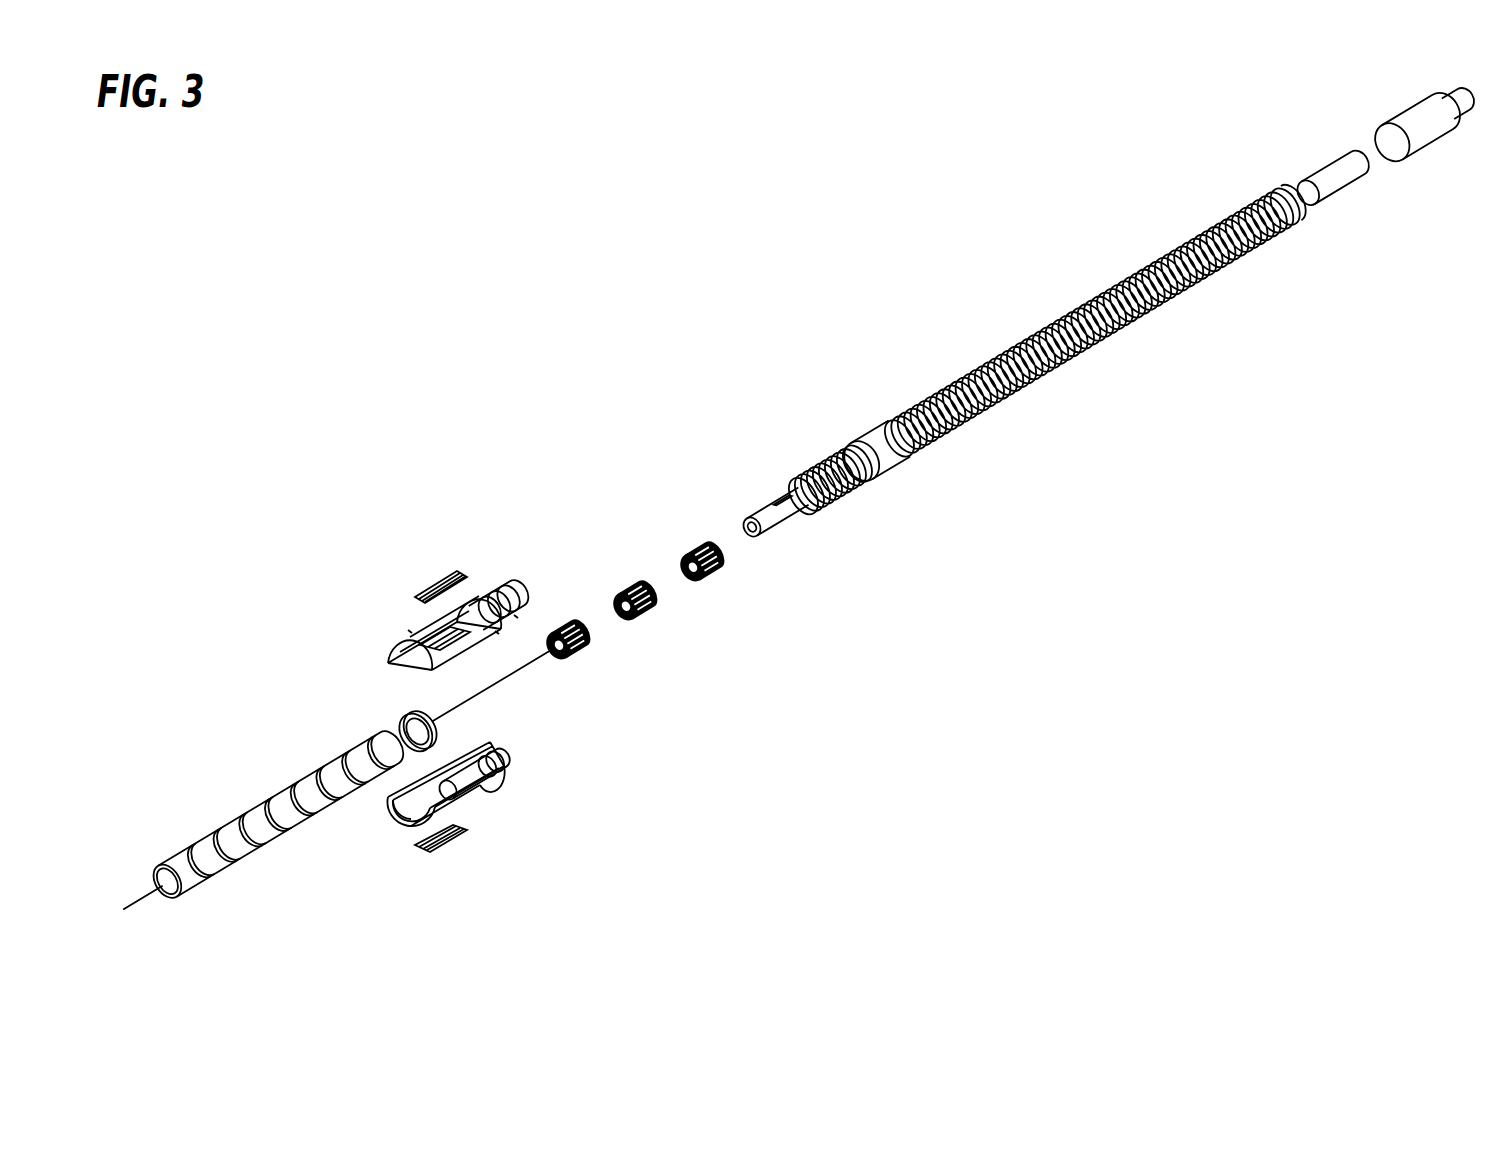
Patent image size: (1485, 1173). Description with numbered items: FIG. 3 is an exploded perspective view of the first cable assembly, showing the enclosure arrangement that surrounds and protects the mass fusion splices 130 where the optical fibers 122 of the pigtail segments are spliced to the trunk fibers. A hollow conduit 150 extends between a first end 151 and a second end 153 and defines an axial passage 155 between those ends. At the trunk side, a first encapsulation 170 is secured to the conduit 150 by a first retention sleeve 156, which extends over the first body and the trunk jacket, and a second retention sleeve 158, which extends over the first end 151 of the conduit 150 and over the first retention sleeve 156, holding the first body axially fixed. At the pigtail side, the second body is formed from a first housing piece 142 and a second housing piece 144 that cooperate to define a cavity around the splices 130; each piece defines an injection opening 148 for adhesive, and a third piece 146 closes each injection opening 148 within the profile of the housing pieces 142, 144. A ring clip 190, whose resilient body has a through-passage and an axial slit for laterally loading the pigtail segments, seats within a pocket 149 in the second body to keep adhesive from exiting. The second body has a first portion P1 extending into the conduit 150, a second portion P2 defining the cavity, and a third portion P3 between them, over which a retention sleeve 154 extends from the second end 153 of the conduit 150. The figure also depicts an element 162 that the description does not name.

The optical fibers 122 is at (140, 897).
The mass fusion splices 130 is at (588, 655).
The first housing piece 142 is at (400, 810).
The second housing piece 144 is at (390, 645).
The third piece 146 is at (453, 578).
The injection opening 148 is at (433, 620).
The pocket 149 is at (400, 810).
The hollow conduit 150 is at (986, 411).
The first end 151 is at (1302, 213).
The second end 153 is at (802, 480).
The retention sleeve 154 is at (899, 468).
The axial passage 155 is at (812, 498).
The first retention sleeve 156 is at (1352, 185).
The second retention sleeve 158 is at (1410, 121).
The spiral cut tube 162 is at (200, 857).
The first encapsulation 170 is at (780, 532).
The ring clip 190 is at (388, 713).
The first portion P1 is at (517, 617).
The second portion P2 is at (408, 628).
The third portion P3 is at (496, 634).